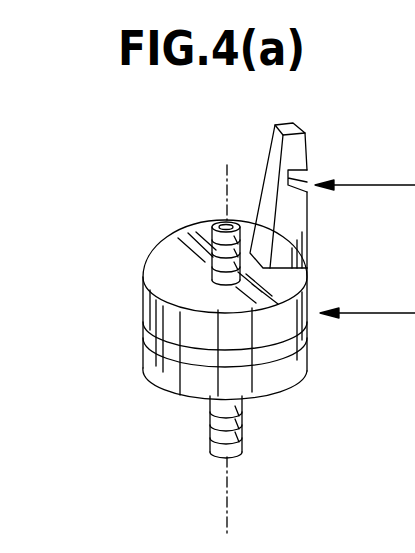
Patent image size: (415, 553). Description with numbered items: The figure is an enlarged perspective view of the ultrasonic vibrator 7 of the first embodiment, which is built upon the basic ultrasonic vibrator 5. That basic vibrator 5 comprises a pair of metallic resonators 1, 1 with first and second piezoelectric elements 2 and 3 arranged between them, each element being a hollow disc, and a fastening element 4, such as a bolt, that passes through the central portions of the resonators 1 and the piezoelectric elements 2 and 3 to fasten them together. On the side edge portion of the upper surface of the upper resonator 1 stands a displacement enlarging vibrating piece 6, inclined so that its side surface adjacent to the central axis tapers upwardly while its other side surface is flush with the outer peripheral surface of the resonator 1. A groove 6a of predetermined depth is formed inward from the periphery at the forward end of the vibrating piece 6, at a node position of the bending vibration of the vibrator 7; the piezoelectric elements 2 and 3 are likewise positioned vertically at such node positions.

The resonator 1 is at (173, 243).
The first piezoelectric element 2 is at (292, 352).
The second piezoelectric element 3 is at (257, 367).
The fastening element 4 is at (213, 457).
The ultrasonic vibrator 5 is at (124, 240).
The displacement enlarging vibrating piece 6 is at (273, 155).
The groove 6a is at (307, 178).
The ultrasonic vibrator 7 is at (44, 405).